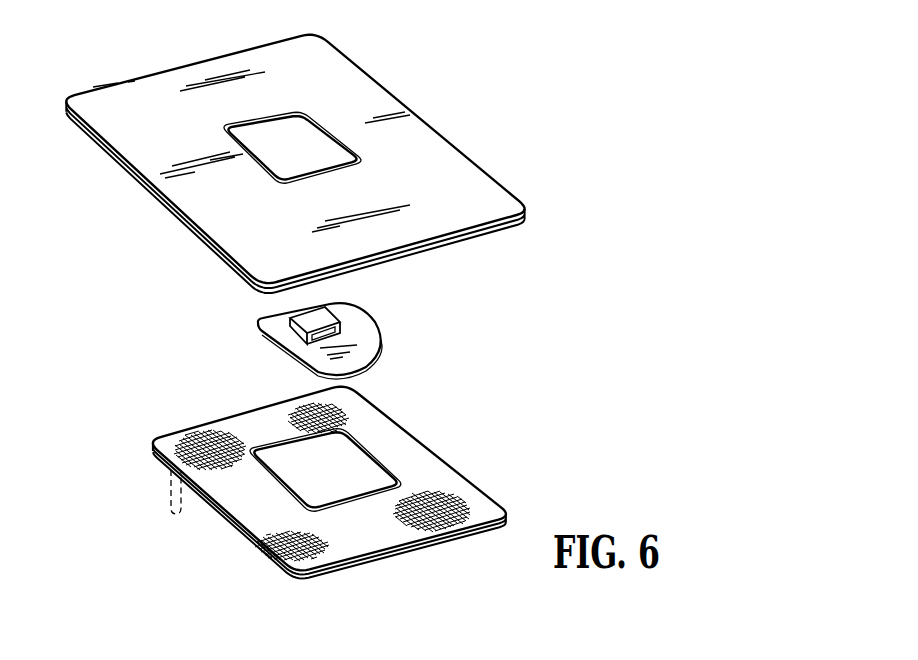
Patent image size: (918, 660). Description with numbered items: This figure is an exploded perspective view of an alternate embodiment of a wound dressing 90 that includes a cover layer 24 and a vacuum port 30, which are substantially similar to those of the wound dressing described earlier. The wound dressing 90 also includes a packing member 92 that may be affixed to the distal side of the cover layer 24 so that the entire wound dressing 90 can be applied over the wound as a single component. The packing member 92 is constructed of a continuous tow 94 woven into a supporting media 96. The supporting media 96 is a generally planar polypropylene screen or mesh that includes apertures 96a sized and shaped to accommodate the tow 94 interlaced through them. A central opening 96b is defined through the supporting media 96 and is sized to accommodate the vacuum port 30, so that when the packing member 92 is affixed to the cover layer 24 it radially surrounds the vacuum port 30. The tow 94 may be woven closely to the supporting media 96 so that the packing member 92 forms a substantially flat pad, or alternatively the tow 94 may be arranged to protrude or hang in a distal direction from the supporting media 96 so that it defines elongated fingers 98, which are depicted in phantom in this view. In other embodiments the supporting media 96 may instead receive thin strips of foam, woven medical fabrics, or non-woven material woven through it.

The wound dressing 90 is at (494, 71).
The cover layer 24 is at (461, 178).
The vacuum port 30 is at (352, 339).
The packing member 92 is at (421, 426).
The tow 94 is at (428, 486).
The supporting media 96 is at (503, 517).
The apertures 96a is at (474, 487).
The central opening 96b is at (346, 466).
The elongated fingers 98 is at (168, 482).